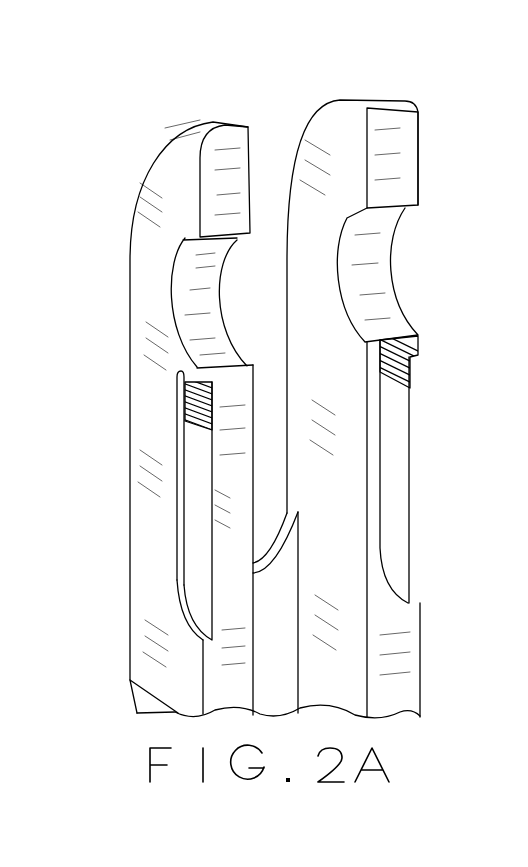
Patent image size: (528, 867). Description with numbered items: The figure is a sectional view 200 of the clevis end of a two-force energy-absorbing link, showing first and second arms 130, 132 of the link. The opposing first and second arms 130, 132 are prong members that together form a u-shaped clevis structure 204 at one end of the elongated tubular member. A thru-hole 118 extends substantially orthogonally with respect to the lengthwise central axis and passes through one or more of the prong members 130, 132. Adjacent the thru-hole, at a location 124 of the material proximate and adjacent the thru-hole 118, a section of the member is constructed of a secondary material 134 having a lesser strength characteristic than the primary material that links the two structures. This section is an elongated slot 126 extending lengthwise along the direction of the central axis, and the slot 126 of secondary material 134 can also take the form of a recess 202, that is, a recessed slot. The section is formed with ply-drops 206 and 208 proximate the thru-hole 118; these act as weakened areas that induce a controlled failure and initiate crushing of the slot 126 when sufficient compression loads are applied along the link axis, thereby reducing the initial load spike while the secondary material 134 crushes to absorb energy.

The sectional view 200 is at (113, 145).
The first arm 130 is at (210, 118).
The second arm 132 is at (365, 100).
The u-shaped clevis structure 204 is at (273, 190).
The thru-hole 118 is at (168, 288).
The location 124 is at (173, 355).
The ply-drop 206 is at (200, 389).
The recess 202 is at (175, 455).
The ply-drop 208 is at (408, 370).
The slot 126 is at (200, 578).
The secondary material 134 is at (163, 667).